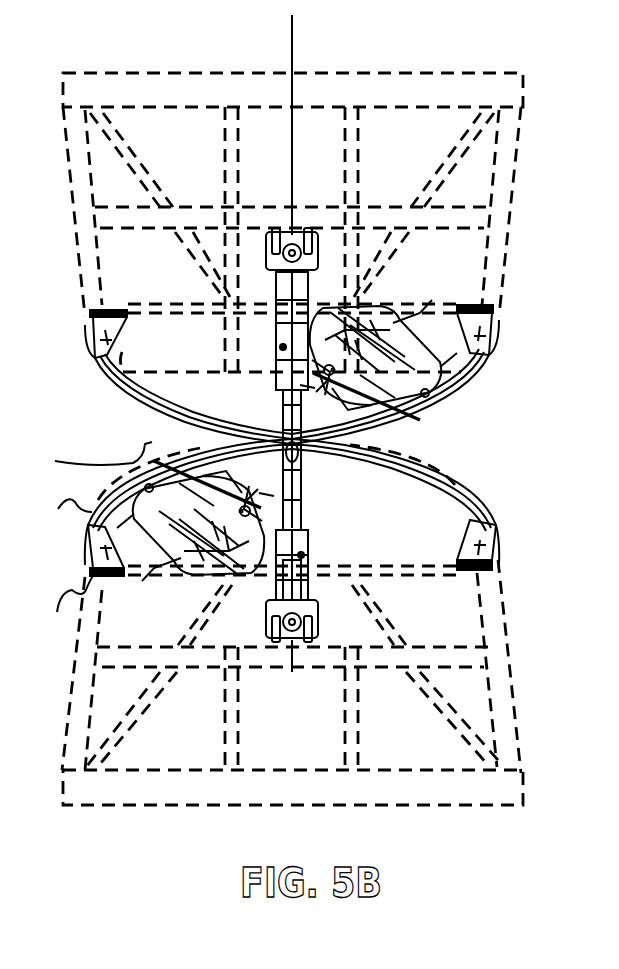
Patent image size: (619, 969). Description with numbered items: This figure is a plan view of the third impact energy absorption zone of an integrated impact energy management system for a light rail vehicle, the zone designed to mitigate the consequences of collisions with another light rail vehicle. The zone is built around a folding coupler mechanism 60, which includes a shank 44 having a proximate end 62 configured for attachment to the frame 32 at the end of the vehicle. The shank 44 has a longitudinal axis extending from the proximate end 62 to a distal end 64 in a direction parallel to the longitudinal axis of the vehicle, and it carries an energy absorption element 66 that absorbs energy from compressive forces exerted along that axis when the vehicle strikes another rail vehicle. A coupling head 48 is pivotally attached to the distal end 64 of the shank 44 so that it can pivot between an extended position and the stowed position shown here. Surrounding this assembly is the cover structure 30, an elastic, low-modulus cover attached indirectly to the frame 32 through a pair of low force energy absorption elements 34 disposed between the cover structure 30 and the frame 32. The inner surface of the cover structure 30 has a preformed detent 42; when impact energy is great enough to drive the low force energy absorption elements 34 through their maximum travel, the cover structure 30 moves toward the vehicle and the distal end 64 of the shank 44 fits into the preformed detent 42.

The cover structure 30 is at (53, 505).
The frame 32 is at (506, 622).
The low force energy absorption elements 34 is at (53, 600).
The preformed detent 42 is at (152, 430).
The shank 44 is at (305, 568).
The coupling head 48 is at (192, 600).
The folding coupler mechanism 60 is at (327, 529).
The proximate end 62 is at (295, 605).
The distal end 64 is at (83, 457).
The energy absorption element 66 is at (312, 503).